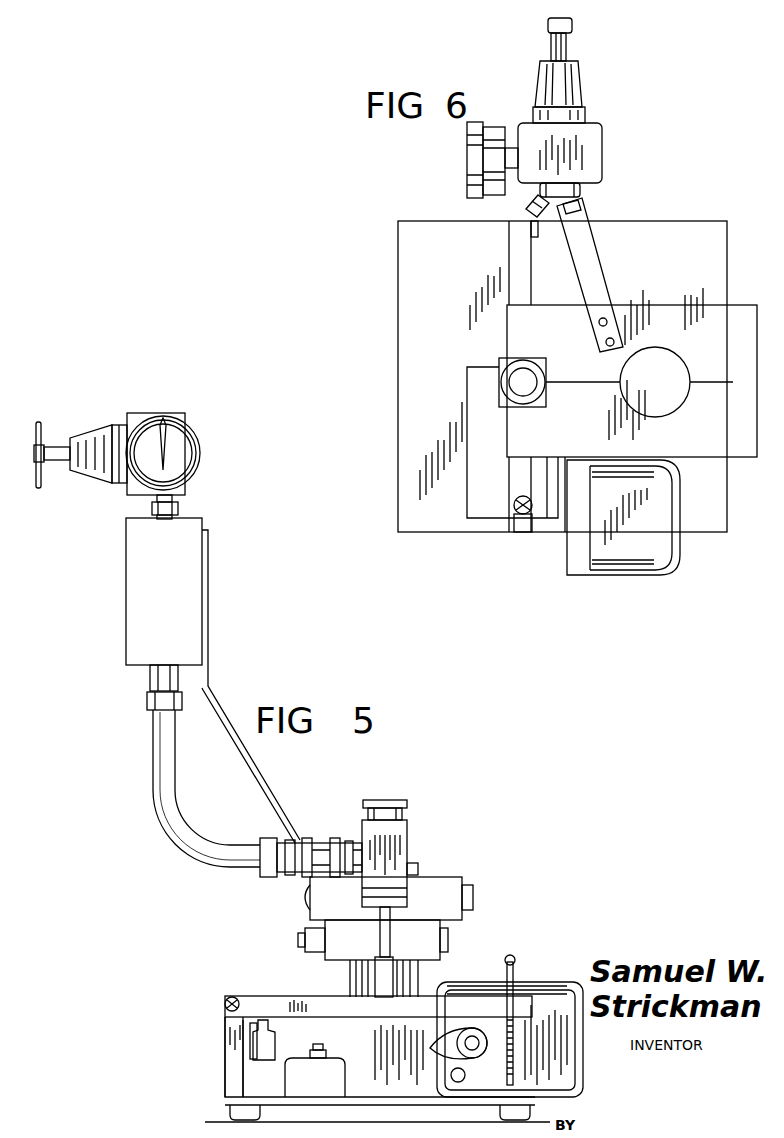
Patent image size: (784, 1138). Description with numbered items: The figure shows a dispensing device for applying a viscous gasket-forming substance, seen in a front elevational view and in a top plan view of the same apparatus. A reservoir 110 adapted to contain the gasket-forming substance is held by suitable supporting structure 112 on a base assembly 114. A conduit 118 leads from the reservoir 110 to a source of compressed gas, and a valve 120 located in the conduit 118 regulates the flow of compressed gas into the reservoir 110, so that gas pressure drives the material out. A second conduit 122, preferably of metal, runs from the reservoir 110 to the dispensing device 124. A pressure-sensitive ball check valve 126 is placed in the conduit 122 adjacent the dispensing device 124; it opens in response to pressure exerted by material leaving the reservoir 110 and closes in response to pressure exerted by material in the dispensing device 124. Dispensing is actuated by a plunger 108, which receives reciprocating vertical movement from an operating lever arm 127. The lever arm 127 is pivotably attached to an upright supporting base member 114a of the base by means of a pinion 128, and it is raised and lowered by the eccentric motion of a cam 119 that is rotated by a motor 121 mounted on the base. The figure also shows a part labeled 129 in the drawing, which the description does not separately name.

In FIG. 5, the plunger 108 is at (388, 924).
In FIG. 5, the reservoir 110 is at (128, 568).
In FIG. 6, the supporting structure 112 is at (590, 243).
In FIG. 5, the supporting structure 112 is at (233, 748).
In FIG. 6, the base assembly 114 is at (746, 308).
In FIG. 5, the base assembly 114 is at (222, 1086).
In FIG. 5, the upright supporting base member 114a is at (228, 1060).
In FIG. 5, the conduit 118 is at (180, 508).
In FIG. 5, the cam 119 is at (462, 985).
In FIG. 6, the valve 120 is at (597, 121).
In FIG. 5, the valve 120 is at (92, 437).
In FIG. 6, the motor 121 is at (681, 552).
In FIG. 5, the motor 121 is at (533, 984).
In FIG. 6, the conduit 122 is at (525, 208).
In FIG. 5, the conduit 122 is at (153, 806).
In FIG. 6, the dispensing device 124 is at (500, 385).
In FIG. 5, the dispensing device 124 is at (408, 852).
In FIG. 5, the pressure-sensitive ball check valve 126 is at (313, 840).
In FIG. 5, the operating lever arm 127 is at (327, 996).
In FIG. 6, the pinion 128 is at (510, 232).
In FIG. 5, the pinion 128 is at (226, 999).
In FIG. 6, the post 129 is at (513, 273).